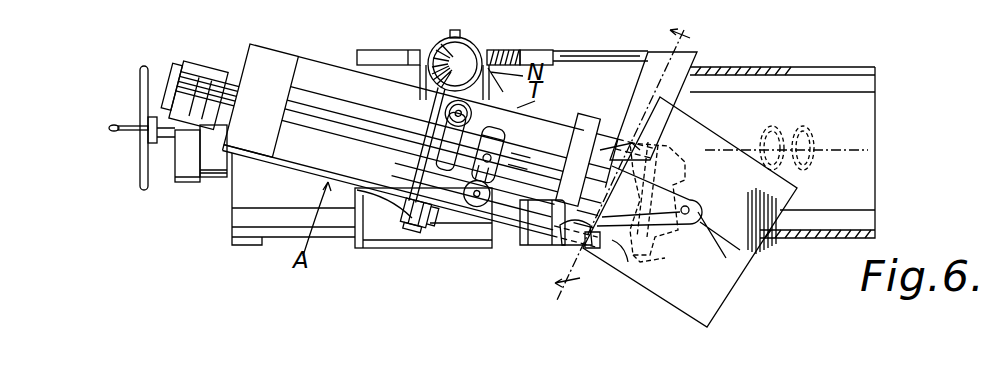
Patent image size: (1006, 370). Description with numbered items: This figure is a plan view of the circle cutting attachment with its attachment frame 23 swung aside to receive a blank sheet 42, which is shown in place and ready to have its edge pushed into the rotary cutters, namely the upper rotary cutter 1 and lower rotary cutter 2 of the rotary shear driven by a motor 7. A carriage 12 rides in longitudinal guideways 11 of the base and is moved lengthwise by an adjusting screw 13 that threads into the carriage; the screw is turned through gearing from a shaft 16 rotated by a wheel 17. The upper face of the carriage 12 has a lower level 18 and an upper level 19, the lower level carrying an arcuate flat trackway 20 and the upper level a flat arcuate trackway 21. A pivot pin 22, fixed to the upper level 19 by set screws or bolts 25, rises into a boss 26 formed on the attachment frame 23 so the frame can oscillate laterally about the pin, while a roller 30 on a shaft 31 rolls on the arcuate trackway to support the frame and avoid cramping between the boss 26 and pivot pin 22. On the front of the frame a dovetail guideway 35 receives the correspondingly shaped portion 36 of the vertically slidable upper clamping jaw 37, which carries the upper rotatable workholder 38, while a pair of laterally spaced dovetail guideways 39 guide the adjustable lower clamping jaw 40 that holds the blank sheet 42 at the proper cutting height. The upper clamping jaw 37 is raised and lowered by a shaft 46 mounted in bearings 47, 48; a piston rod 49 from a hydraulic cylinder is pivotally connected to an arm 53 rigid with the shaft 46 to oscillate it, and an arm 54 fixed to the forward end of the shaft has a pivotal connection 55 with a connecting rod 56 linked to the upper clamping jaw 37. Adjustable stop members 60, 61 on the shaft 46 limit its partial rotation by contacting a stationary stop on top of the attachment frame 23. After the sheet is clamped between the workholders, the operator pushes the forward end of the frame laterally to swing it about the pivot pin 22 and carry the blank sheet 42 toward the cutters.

The upper rotary cutter 1 is at (813, 137).
The lower rotary cutter 2 is at (780, 170).
The motor 7 is at (639, 164).
The longitudinal guideways 11 is at (875, 67).
The carriage 12 is at (590, 86).
The adjusting screw 13 is at (240, 158).
The shaft 16 is at (163, 135).
The wheel 17 is at (143, 66).
The lower level 18 is at (650, 106).
The upper level 19 is at (453, 218).
The arcuate flat trackway 20 is at (597, 125).
The flat arcuate trackway 21 is at (378, 222).
The pivot pin 22 is at (447, 47).
The attachment frame 23 is at (383, 63).
The set screws or bolts 25 is at (472, 50).
The boss 26 is at (517, 53).
The roller 30 is at (430, 212).
The shaft 31 is at (413, 240).
The dovetail guideway 35 is at (548, 238).
The correspondingly shaped portion 36 is at (514, 166).
The upper clamping jaw 37 is at (603, 149).
The upper rotatable workholder 38 is at (700, 206).
The dovetail guideways 39 is at (670, 248).
The lower clamping jaw 40 is at (680, 198).
The blank sheet 42 is at (720, 140).
The shaft 46 is at (312, 107).
The bearing 47 is at (520, 150).
The bearing 48 is at (230, 88).
The piston rod 49 is at (170, 110).
The arm 53 is at (176, 100).
The arm 54 is at (617, 333).
The pivotal connection 55 is at (623, 263).
The connecting rod 56 is at (565, 240).
The adjustable stop member 60 is at (499, 190).
The adjustable stop member 61 is at (452, 146).